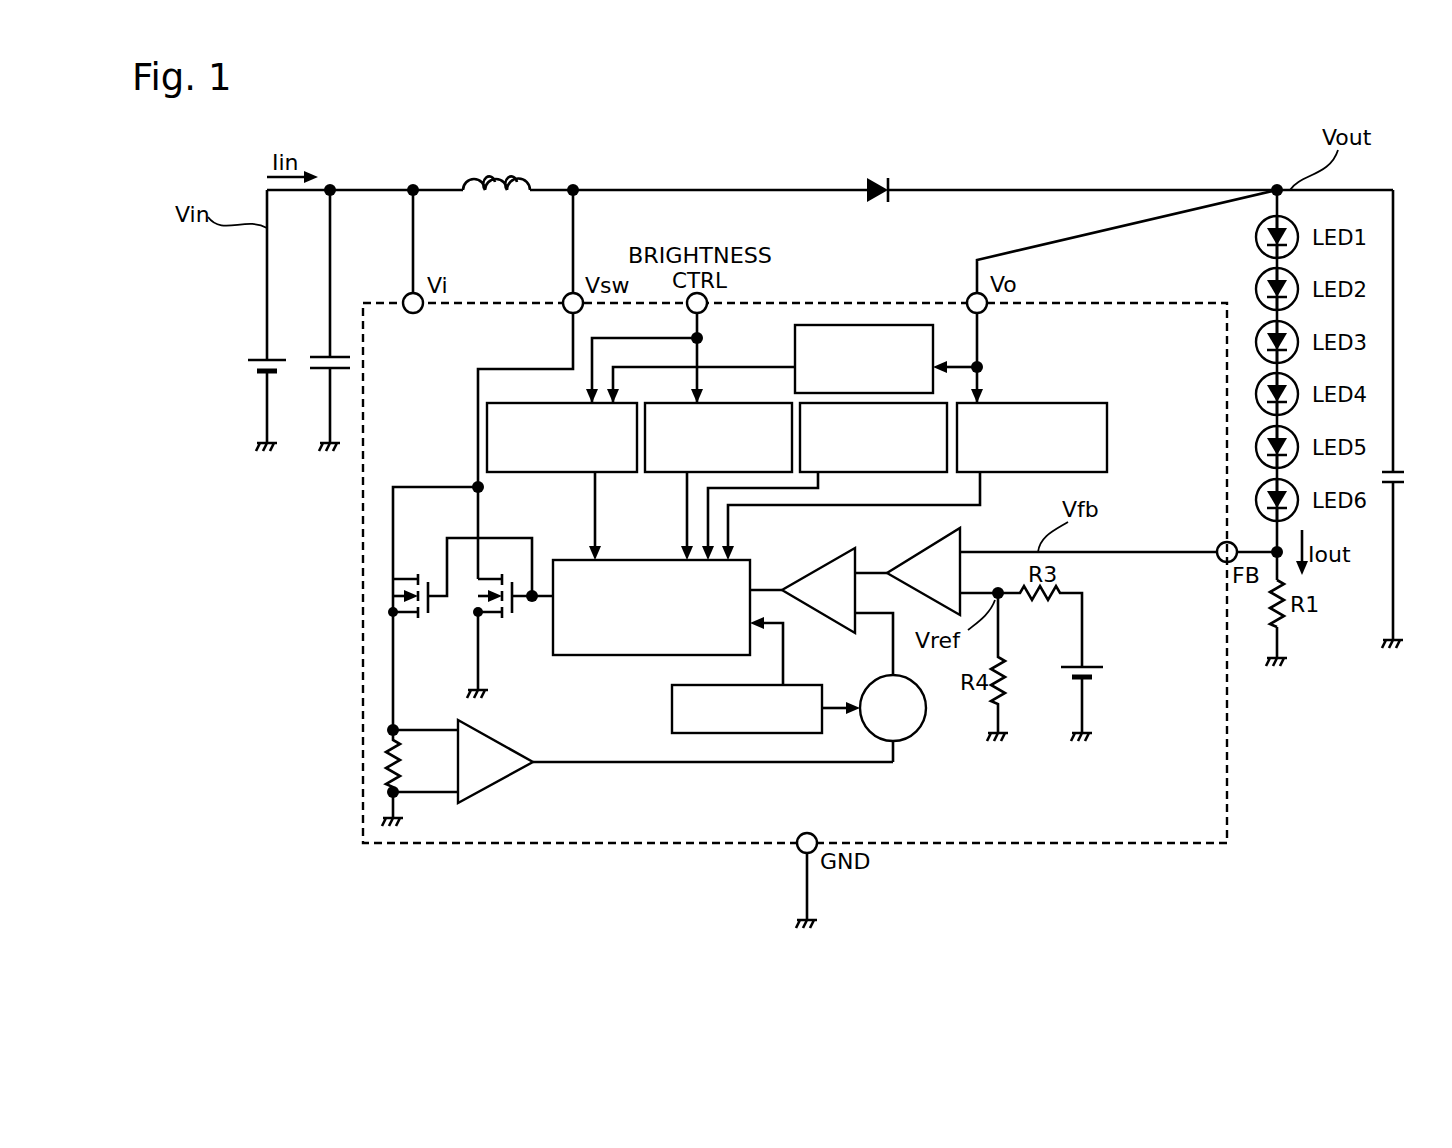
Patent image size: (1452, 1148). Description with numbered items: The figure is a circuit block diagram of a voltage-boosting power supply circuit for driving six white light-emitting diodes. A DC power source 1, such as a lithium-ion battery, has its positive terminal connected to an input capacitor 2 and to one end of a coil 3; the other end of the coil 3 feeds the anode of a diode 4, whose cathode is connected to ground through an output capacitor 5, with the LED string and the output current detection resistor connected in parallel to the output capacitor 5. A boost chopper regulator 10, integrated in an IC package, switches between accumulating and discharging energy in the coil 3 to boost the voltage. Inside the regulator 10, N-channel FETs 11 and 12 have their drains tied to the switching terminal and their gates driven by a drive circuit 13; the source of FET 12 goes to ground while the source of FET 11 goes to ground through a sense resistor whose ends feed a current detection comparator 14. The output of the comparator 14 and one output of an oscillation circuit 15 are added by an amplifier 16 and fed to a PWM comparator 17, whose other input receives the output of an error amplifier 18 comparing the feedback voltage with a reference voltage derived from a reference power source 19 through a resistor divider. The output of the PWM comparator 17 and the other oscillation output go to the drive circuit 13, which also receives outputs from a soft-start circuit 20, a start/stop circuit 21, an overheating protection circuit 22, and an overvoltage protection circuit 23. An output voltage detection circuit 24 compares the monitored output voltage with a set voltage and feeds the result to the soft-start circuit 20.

The DC power source 1 is at (258, 356).
The input capacitor 2 is at (326, 354).
The coil 3 is at (497, 186).
The diode 4 is at (881, 183).
The output capacitor 5 is at (1397, 470).
The boost chopper regulator 10 is at (822, 303).
The N-channel FET 11 is at (418, 620).
The N-channel FET 12 is at (502, 620).
The drive circuit 13 is at (585, 657).
The current detection comparator 14 is at (498, 782).
The oscillation circuit 15 is at (672, 702).
The amplifier 16 is at (920, 738).
The PWM comparator 17 is at (826, 569).
The error amplifier 18 is at (961, 543).
The reference power source 19 is at (1072, 677).
The soft-start circuit 20 is at (553, 474).
The start/stop circuit 21 is at (668, 474).
The overheating protection circuit 22 is at (850, 474).
The overvoltage protection circuit 23 is at (1045, 403).
The output voltage detection circuit 24 is at (795, 345).